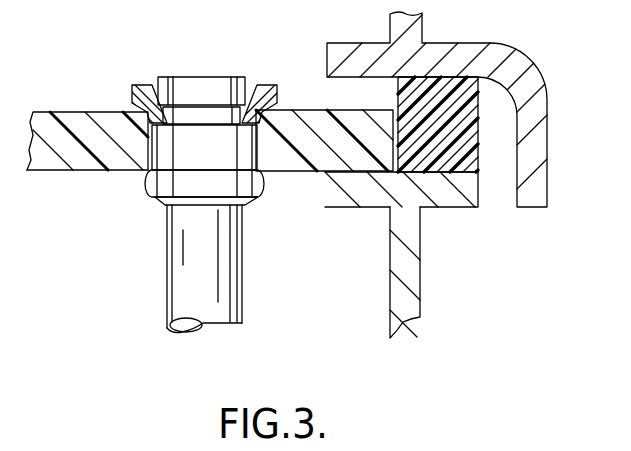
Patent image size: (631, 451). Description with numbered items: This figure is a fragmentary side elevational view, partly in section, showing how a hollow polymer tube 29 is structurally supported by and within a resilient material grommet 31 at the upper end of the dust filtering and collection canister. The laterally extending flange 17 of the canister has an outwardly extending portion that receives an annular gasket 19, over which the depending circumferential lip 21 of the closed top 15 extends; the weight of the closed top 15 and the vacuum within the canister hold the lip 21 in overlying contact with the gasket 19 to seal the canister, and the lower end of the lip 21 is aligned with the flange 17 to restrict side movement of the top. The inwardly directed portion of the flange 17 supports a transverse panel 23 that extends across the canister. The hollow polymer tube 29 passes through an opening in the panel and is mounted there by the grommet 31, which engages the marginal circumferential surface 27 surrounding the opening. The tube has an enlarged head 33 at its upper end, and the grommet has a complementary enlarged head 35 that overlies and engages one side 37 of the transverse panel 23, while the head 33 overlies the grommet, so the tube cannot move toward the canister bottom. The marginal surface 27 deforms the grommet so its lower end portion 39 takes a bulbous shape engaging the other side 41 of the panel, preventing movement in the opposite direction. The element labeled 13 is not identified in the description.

The bracket leg 13 is at (406, 286).
The closed top 15 is at (376, 18).
The laterally extending flange 17 is at (373, 197).
The annular gasket 19 is at (457, 140).
The depending circumferential lip 21 is at (533, 197).
The transverse panel 23 is at (293, 142).
The marginal circumferential surface 27 is at (157, 176).
The hollow polymer tube 29 is at (203, 298).
The resilient material grommet 31 is at (203, 155).
The enlarged head 33 is at (187, 92).
The enlarged head 35 is at (136, 86).
The one side 37 is at (65, 112).
The lower end portions 39 is at (255, 187).
The other side 41 is at (78, 172).